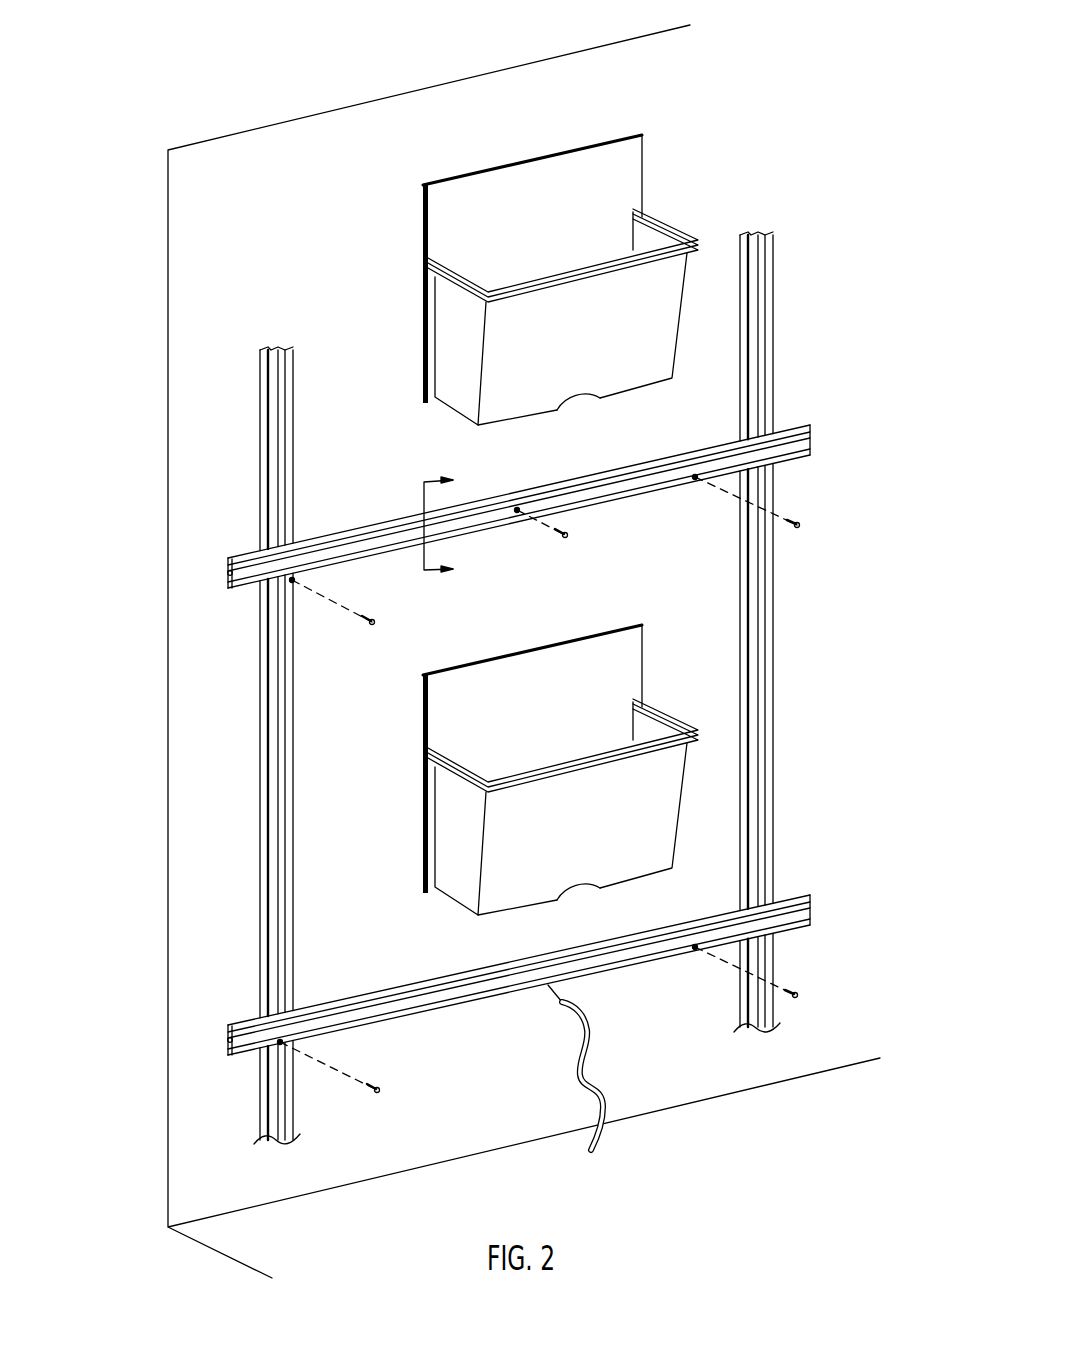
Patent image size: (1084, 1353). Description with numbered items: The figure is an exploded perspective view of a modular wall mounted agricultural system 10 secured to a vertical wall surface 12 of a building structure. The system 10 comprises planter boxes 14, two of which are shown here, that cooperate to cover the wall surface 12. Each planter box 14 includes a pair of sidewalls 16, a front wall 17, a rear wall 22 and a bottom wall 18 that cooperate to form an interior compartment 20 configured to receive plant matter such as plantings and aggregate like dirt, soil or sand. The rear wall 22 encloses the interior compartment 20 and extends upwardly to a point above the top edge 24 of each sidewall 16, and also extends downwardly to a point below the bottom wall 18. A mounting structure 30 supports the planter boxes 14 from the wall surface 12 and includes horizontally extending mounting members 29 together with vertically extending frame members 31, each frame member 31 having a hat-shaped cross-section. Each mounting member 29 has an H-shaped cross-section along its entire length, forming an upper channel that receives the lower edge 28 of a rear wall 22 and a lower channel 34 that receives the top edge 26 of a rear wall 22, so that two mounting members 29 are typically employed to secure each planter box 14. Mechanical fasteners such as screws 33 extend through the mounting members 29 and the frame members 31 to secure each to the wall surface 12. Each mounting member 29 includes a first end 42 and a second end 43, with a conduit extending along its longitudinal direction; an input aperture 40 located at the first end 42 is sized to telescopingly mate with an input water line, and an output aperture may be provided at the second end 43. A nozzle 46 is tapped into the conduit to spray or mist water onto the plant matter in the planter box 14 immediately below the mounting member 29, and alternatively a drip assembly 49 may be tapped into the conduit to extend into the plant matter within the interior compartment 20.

The modular wall mounted agricultural system 10 is at (207, 97).
The vertical wall surface 12 is at (348, 662).
The planter box 14 is at (608, 133).
The sidewall 16 is at (643, 235).
The front wall 17 is at (667, 355).
The bottom wall 18 is at (528, 413).
The interior compartment 20 is at (517, 267).
The rear wall 22 is at (627, 156).
The top edge 24 is at (663, 220).
The top edge 26 is at (518, 162).
The lower edge 28 is at (432, 405).
The mounting member 29 is at (362, 527).
The mounting structure 30 is at (232, 363).
The vertically extending frame member 31 is at (258, 430).
The screw 33 is at (378, 620).
The lower channel 34 is at (228, 582).
The input aperture 40 is at (228, 568).
The first end 42 is at (248, 575).
The second end 43 is at (792, 460).
The nozzle 46 is at (565, 540).
The drip assembly 49 is at (607, 1086).